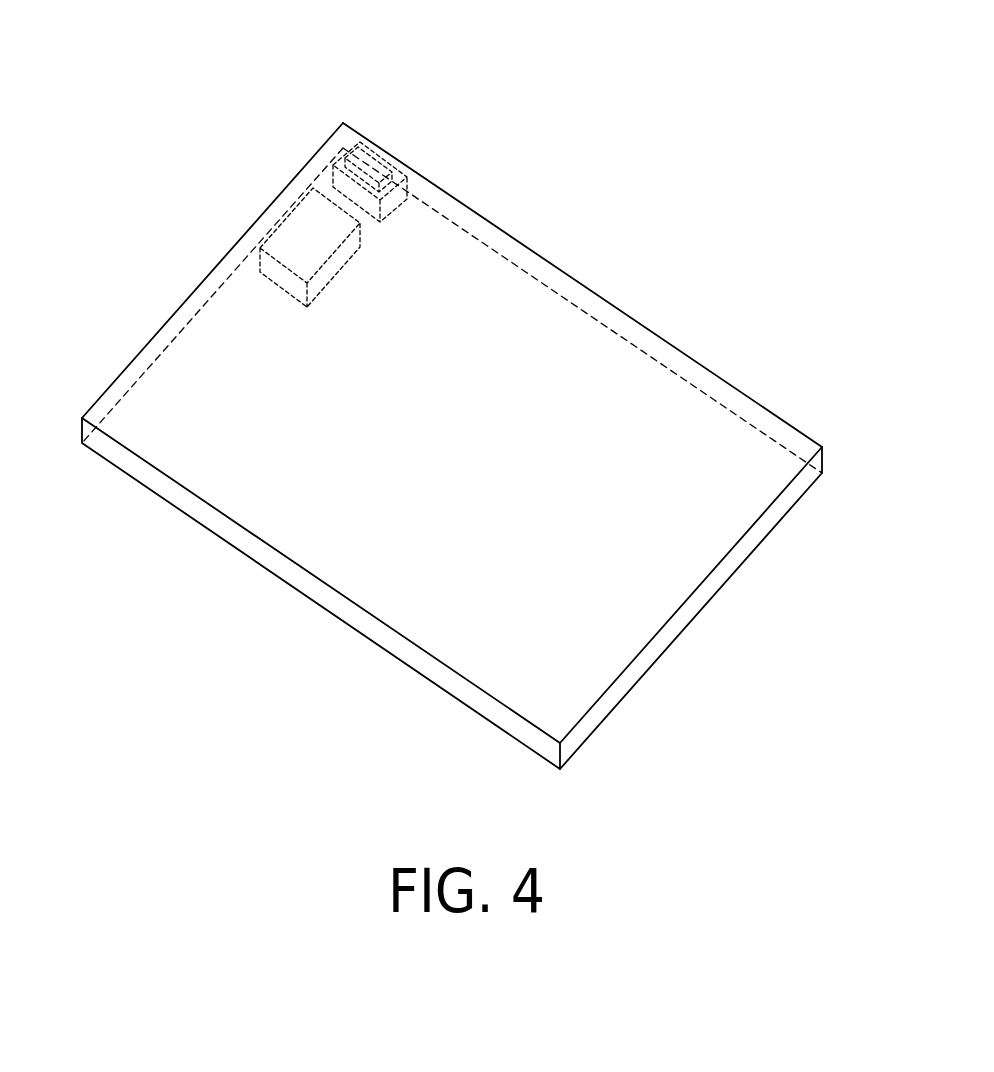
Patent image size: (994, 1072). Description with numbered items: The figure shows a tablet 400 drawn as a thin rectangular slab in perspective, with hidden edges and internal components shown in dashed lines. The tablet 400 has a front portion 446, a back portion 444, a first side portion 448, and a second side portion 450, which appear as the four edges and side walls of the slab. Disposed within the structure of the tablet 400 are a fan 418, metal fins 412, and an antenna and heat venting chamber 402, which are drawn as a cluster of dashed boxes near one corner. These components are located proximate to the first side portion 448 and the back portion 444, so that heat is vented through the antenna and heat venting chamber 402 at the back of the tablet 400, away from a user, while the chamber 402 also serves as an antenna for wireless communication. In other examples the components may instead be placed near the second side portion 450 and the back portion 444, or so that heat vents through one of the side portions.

The tablet 400 is at (79, 31).
The antenna and heat venting chamber 402 is at (382, 170).
The metal fins 412 is at (337, 188).
The fan 418 is at (297, 237).
The back portion 444 is at (578, 282).
The front portion 446 is at (238, 543).
The first side portion 448 is at (183, 306).
The second side portion 450 is at (703, 603).